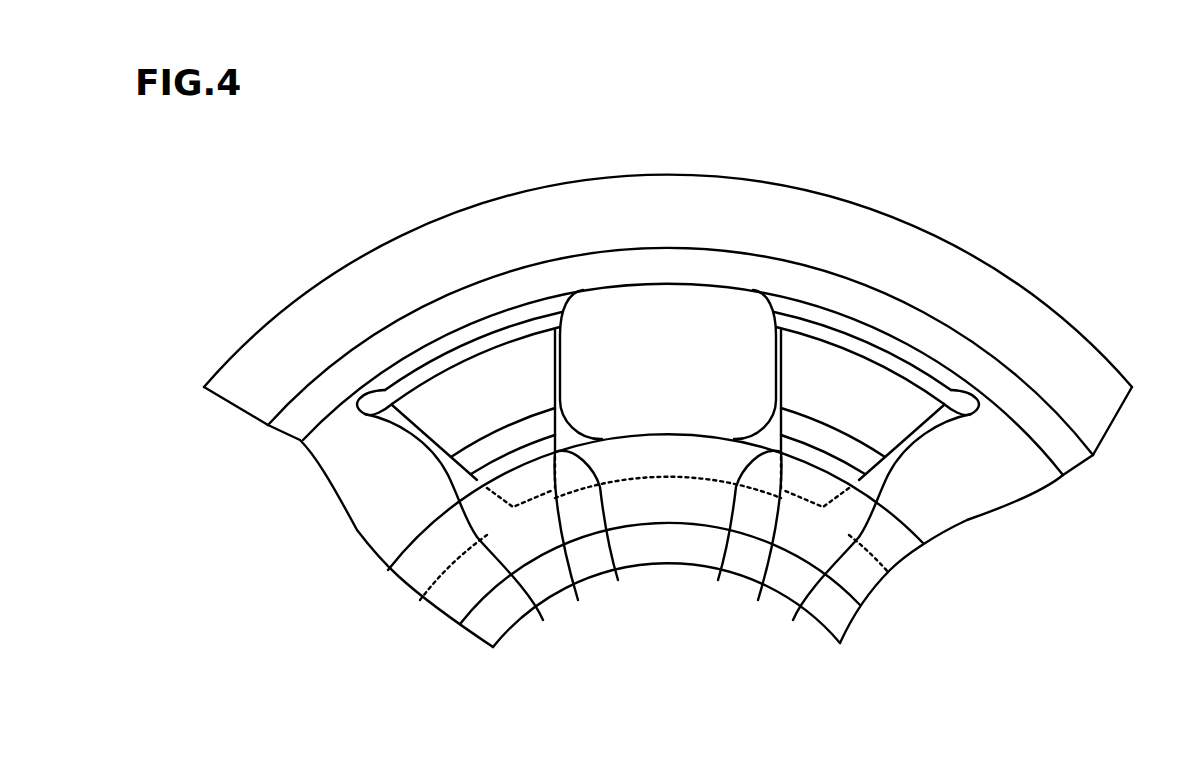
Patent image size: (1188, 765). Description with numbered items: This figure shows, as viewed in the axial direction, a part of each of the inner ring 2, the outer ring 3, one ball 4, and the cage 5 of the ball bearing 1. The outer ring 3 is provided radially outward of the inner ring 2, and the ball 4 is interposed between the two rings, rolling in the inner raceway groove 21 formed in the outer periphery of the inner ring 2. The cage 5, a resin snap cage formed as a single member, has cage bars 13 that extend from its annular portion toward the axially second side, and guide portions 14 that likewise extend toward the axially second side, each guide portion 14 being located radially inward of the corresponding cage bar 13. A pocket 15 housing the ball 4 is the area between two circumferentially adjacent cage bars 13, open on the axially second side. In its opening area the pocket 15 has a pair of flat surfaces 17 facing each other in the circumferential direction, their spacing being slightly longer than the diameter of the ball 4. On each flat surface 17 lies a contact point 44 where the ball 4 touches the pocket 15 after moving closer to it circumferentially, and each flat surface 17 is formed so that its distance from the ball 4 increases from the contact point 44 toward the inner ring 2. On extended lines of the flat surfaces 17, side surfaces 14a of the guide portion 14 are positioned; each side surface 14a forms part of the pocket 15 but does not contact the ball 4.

The ball bearing 1 is at (706, 172).
The inner ring 2 is at (668, 505).
The outer ring 3 is at (592, 207).
The ball 4 is at (313, 390).
The cage 5 is at (895, 362).
The cage bar 13 is at (475, 410).
The guide portion 14 is at (578, 592).
The side surface 14a is at (544, 620).
The pocket 15 is at (643, 327).
The flat surface 17 is at (583, 290).
The inner raceway groove 21 is at (660, 478).
The contact point 44 is at (560, 367).